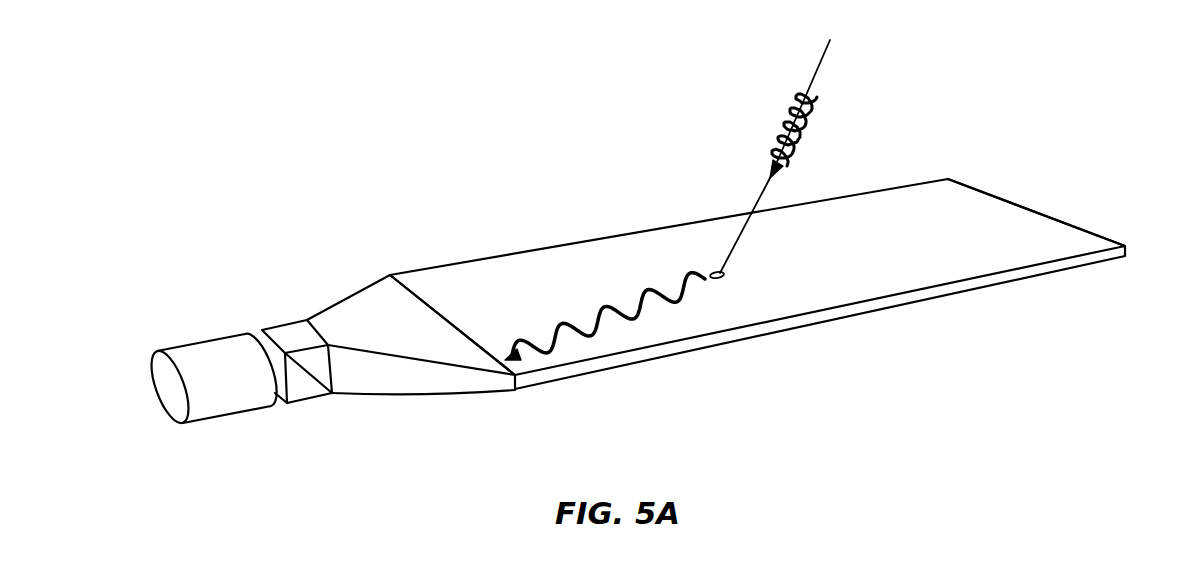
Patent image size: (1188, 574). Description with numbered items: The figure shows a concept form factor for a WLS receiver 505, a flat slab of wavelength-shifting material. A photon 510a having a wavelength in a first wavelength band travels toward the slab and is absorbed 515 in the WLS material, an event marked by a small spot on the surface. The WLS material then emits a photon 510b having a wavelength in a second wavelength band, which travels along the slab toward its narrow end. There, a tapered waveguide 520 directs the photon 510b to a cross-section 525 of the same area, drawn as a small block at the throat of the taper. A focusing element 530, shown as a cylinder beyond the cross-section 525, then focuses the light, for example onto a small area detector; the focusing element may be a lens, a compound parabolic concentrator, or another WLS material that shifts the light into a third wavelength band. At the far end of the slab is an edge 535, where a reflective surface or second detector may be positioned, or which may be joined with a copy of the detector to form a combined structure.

The WLS receiver 505 is at (488, 258).
The photon 510a is at (802, 138).
The photon 510b is at (608, 332).
The absorption 515 is at (721, 279).
The tapered waveguide 520 is at (342, 298).
The cross-section 525 is at (290, 320).
The focusing element 530 is at (195, 340).
The edge 535 is at (1050, 217).